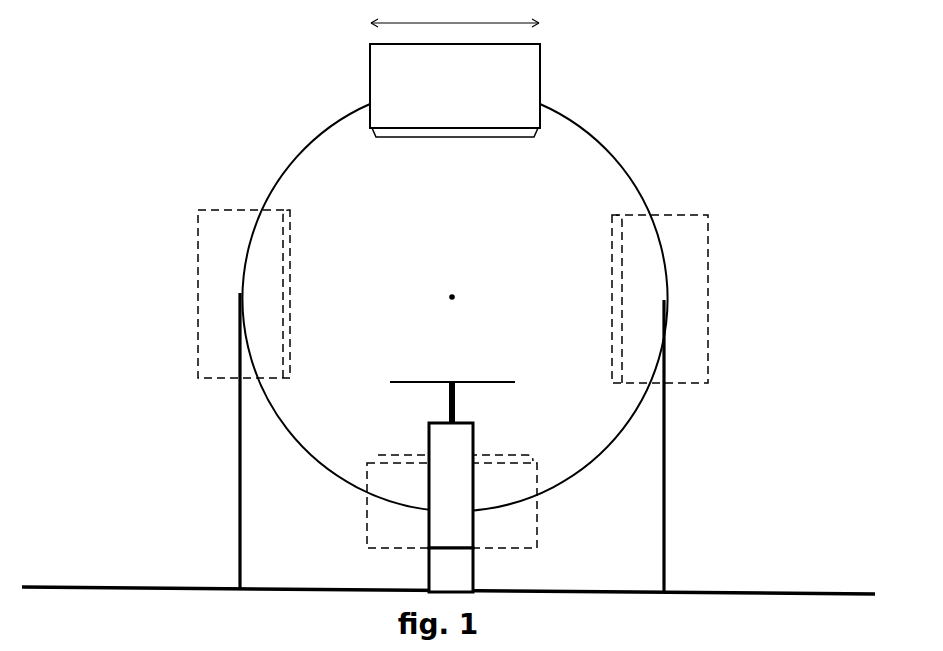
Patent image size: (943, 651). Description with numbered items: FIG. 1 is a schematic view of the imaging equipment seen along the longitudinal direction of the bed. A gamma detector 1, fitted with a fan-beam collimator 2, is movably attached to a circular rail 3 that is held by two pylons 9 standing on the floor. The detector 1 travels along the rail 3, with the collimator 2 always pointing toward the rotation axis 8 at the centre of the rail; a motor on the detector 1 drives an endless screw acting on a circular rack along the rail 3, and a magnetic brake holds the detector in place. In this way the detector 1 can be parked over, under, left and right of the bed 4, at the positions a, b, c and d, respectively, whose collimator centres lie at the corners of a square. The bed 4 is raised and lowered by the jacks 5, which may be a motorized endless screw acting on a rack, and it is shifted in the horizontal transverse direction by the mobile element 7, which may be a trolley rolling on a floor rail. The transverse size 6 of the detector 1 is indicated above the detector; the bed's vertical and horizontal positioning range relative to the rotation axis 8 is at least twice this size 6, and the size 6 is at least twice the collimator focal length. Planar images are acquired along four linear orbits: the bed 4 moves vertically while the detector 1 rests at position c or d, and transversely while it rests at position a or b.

The gamma detector 1 is at (455, 86).
The fan-beam collimator 2 is at (455, 145).
The circular rail 3 is at (297, 153).
The bed 4 is at (452, 386).
The jacks 5 is at (451, 485).
The transverse size of the detector 6 is at (455, 13).
The mobile element 7 is at (451, 570).
The rotation axis 8 is at (451, 290).
The pylons 9 is at (236, 476).
The position a is at (522, 68).
The position b is at (517, 526).
The position c is at (258, 298).
The position d is at (644, 300).